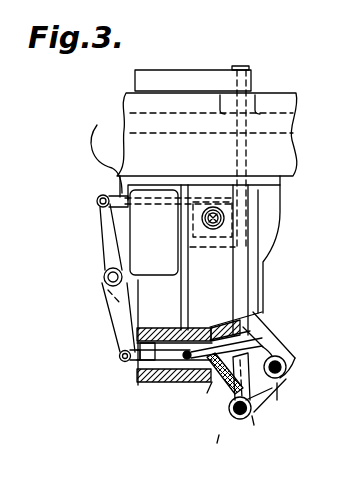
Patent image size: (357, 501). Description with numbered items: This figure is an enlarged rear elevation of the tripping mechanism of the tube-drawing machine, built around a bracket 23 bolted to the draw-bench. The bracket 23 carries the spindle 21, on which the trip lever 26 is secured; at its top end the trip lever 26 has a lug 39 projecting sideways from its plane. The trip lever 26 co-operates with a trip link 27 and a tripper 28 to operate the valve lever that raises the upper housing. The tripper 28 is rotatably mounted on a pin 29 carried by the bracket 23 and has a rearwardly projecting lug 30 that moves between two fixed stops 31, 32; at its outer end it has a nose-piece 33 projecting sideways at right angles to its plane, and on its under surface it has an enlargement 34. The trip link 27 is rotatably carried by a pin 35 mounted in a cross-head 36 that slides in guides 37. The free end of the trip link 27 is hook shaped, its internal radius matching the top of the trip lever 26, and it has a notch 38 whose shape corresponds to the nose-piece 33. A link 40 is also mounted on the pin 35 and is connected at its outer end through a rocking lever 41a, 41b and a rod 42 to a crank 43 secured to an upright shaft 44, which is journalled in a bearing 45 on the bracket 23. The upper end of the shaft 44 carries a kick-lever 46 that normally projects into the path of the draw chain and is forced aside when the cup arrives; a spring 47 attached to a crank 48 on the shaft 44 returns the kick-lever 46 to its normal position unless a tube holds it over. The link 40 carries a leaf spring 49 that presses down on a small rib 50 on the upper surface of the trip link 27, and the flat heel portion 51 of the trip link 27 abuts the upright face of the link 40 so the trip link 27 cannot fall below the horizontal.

The kick-lever 46 is at (197, 78).
The upright shaft 44 is at (243, 150).
The bearing 45 is at (187, 287).
The crank 43 is at (246, 188).
The rod 42 is at (98, 146).
The rocking lever 41b is at (100, 212).
The rocking lever 41a is at (118, 306).
The link 40 is at (135, 362).
The bracket 23 is at (178, 232).
The notch 38 is at (230, 322).
The spring 47 is at (204, 216).
The crank 48 is at (204, 226).
The nose-piece 33 is at (263, 332).
The leaf spring 49 is at (142, 328).
The rib 50 is at (180, 327).
The trip link 27 is at (222, 338).
The heel portion 51 is at (133, 385).
The pin 35 is at (170, 385).
The cross-head 36 is at (187, 385).
The lug 39 is at (218, 398).
The guides 37 is at (207, 393).
The tripper 28 is at (263, 340).
The fixed stop 31 is at (287, 363).
The pin 29 is at (297, 367).
The lug 30 is at (284, 382).
The spindle 21 is at (222, 417).
The fixed stop 32 is at (277, 400).
The enlargement 34 is at (254, 425).
The trip lever 26 is at (217, 443).